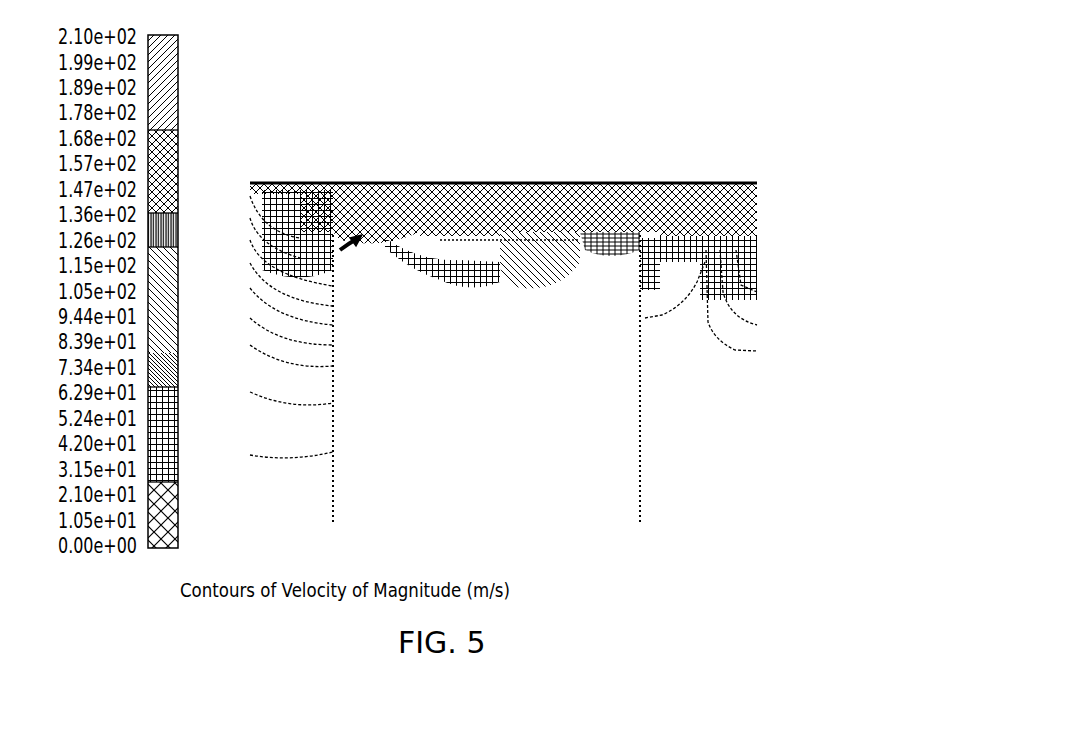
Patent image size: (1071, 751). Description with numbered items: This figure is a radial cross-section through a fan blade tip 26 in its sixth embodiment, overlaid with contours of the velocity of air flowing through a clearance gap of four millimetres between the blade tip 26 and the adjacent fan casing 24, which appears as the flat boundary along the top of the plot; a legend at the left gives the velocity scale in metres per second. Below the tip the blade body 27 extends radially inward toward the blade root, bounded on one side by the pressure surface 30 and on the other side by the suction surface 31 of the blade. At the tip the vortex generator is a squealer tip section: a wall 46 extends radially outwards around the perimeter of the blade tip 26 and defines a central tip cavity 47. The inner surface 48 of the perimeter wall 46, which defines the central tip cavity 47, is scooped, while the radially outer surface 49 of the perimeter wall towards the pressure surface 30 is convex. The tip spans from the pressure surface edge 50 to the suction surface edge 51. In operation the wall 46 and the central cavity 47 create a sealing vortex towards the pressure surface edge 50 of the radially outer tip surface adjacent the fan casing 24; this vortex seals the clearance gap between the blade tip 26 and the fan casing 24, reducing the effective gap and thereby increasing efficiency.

The fan casing 24 is at (381, 177).
The blade tip 26 is at (684, 281).
The blade body 27 is at (440, 482).
The pressure surface 30 is at (327, 403).
The right wall 31 is at (645, 375).
The wall 46 is at (605, 195).
The central tip cavity 47 is at (493, 195).
The inner surface 48 is at (428, 184).
The radially outer surface 49 is at (348, 185).
The pressure surface edge 50 is at (298, 183).
The suction surface edge 51 is at (710, 184).